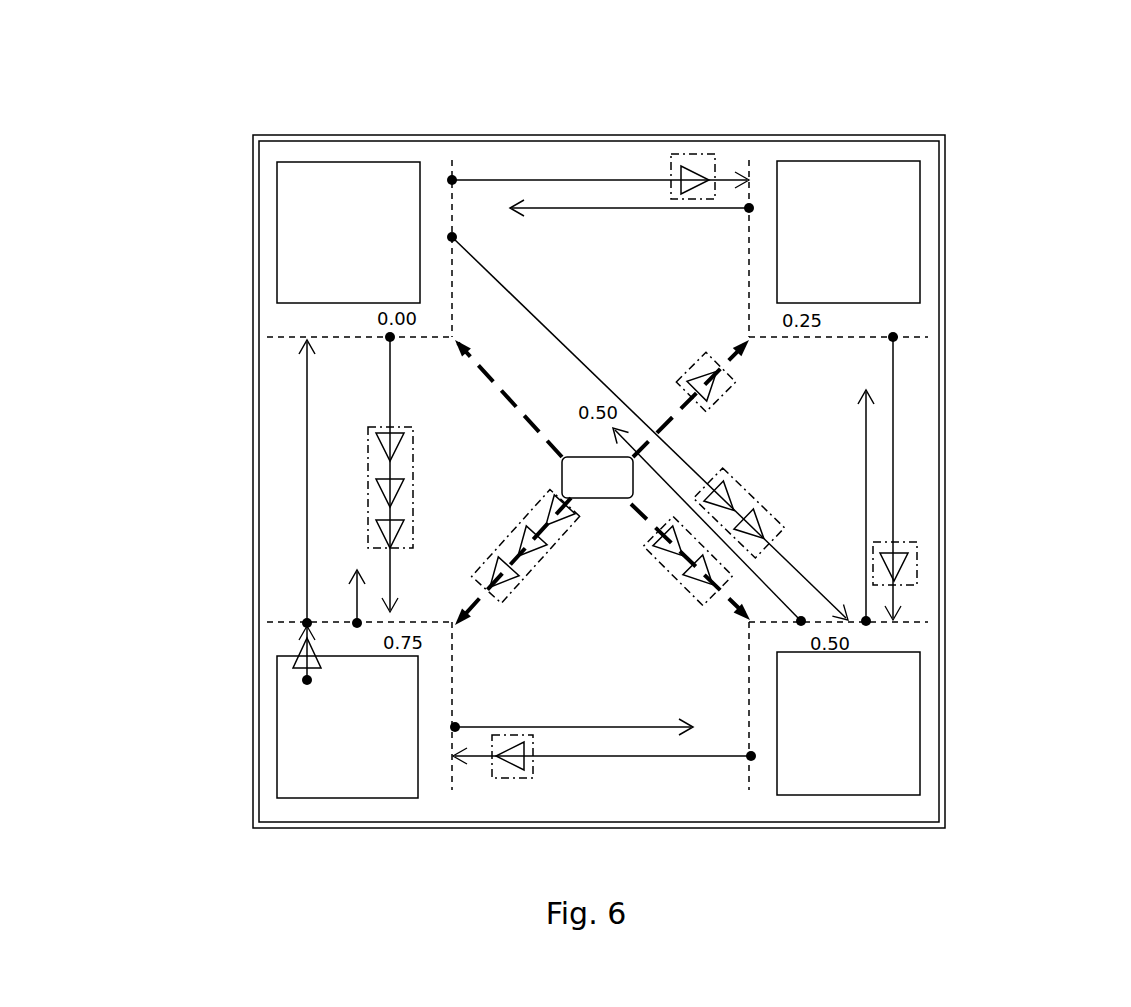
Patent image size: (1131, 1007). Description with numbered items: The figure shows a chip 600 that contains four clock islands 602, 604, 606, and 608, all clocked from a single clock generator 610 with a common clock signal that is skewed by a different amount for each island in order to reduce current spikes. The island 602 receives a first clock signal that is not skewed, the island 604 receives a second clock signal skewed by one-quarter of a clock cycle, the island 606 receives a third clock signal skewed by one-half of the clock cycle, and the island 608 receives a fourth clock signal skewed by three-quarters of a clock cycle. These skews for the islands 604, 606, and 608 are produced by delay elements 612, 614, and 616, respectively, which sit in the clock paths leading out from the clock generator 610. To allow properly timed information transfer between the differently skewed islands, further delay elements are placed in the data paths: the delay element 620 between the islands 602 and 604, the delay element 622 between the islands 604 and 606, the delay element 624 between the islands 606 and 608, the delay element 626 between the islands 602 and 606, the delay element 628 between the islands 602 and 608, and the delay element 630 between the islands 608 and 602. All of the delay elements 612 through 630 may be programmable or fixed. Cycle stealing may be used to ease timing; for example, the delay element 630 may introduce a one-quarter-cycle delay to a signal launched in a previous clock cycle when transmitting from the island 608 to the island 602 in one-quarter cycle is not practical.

The chip 600 is at (1052, 170).
The clock island 602 is at (314, 162).
The clock island 604 is at (882, 161).
The clock island 606 is at (920, 682).
The clock island 608 is at (288, 656).
The clock generator 610 is at (557, 482).
The delay element 612 is at (705, 350).
The delay element 614 is at (700, 605).
The delay element 616 is at (560, 552).
The delay element 620 is at (693, 154).
The delay element 622 is at (917, 545).
The delay element 624 is at (505, 778).
The delay element 626 is at (770, 507).
The delay element 628 is at (368, 460).
The delay element 630 is at (300, 672).